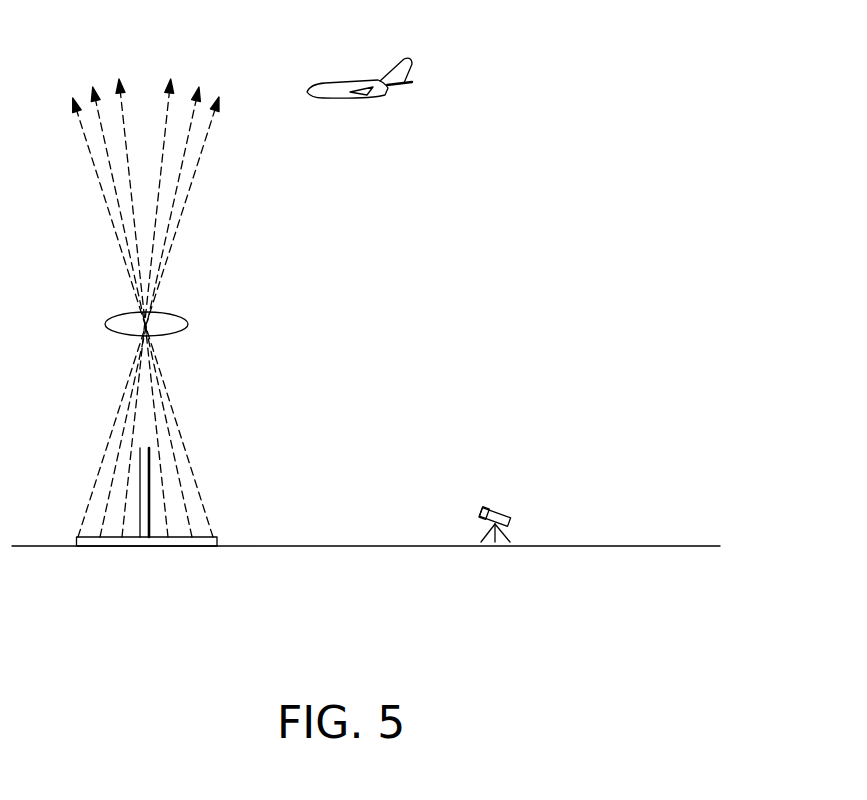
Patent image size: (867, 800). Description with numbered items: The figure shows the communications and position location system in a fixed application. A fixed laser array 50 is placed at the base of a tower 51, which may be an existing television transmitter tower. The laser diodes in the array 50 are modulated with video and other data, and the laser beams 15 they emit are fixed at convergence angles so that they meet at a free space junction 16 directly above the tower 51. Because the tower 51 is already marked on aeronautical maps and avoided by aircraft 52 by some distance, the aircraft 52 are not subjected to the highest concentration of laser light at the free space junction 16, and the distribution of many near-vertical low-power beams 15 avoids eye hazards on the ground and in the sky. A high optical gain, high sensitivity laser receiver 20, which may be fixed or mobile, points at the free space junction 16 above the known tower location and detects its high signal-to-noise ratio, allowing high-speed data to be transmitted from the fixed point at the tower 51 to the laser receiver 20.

The laser beams 15 is at (194, 173).
The free space junction 16 is at (188, 325).
The laser receiver 20 is at (512, 515).
The laser array 50 is at (177, 547).
The tower 51 is at (150, 477).
The aircraft 52 is at (414, 74).